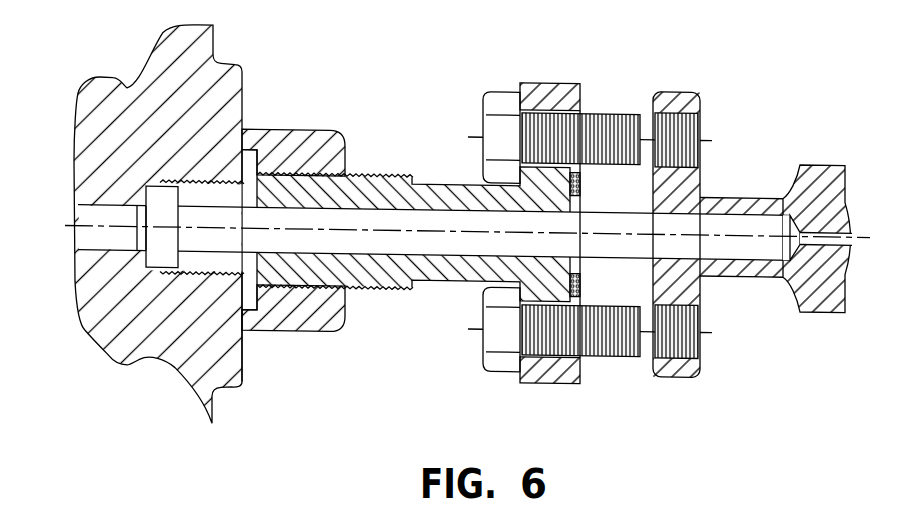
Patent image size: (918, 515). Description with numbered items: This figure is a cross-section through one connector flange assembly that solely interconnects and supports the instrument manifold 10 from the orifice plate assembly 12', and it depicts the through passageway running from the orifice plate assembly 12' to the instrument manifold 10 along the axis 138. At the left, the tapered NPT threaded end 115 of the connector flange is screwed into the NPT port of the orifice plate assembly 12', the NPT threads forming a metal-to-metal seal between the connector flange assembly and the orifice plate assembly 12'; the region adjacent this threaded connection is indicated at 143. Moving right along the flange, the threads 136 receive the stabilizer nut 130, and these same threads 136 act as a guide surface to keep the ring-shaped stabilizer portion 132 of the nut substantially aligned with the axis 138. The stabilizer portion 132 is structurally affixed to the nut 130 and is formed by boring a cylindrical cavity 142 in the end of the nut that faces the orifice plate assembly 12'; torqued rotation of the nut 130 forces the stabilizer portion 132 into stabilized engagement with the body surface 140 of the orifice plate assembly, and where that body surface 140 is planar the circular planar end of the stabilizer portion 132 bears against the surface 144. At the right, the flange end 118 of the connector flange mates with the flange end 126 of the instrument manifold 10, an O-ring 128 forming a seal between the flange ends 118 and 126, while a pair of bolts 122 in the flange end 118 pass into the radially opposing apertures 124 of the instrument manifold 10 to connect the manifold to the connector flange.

The instrument manifold 10 is at (810, 168).
The orifice plate assembly 12' is at (185, 218).
The tapered NPT threaded end 115 is at (191, 274).
The flange end 118 is at (572, 79).
The bolts 122 is at (500, 96).
The apertures 124 is at (702, 110).
The flange end 126 is at (685, 178).
The O-ring 128 is at (583, 174).
The stabilizer nut 130 is at (330, 132).
The stabilizer portion 132 is at (247, 126).
The threads 136 is at (387, 281).
The axis 138 is at (355, 218).
The body surface 140 is at (243, 356).
The cylindrical cavity 142 is at (253, 164).
The bore 143 is at (247, 146).
The surface 144 is at (243, 316).